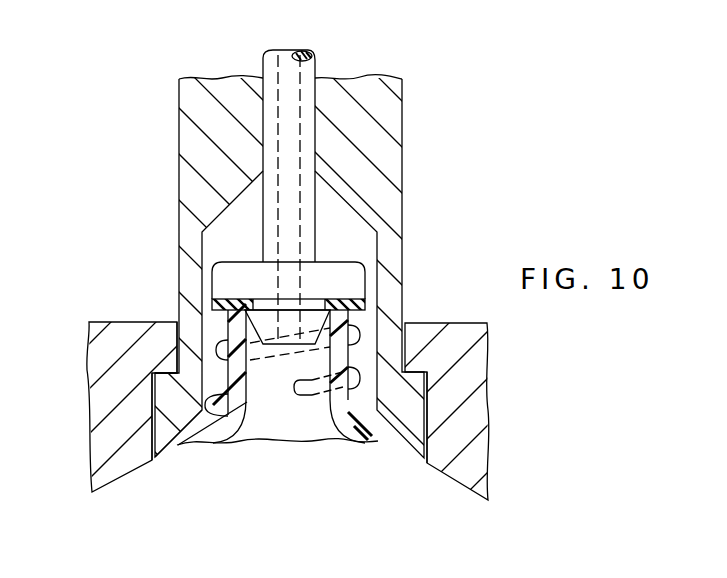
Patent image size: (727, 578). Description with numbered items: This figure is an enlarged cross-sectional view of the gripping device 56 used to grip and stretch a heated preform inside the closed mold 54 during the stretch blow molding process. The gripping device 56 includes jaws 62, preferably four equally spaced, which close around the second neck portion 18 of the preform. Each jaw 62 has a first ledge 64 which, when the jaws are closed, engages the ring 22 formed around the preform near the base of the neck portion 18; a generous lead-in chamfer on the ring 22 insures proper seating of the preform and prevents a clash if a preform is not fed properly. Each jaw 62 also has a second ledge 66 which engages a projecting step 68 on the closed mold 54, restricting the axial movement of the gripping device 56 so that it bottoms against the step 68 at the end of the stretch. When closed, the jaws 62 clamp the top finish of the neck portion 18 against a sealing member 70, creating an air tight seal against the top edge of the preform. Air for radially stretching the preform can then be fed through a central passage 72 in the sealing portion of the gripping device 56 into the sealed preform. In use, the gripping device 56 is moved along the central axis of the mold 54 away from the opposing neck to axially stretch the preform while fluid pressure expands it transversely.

The second neck portion 18 is at (222, 331).
The ring 22 is at (352, 410).
The mold 54 is at (87, 438).
The gripping device 56 is at (408, 194).
The jaws 62 is at (160, 458).
The first ledge 64 is at (200, 391).
The second ledge 66 is at (163, 363).
The projecting step 68 is at (427, 384).
The sealing member 70 is at (365, 304).
The central passage 72 is at (296, 88).